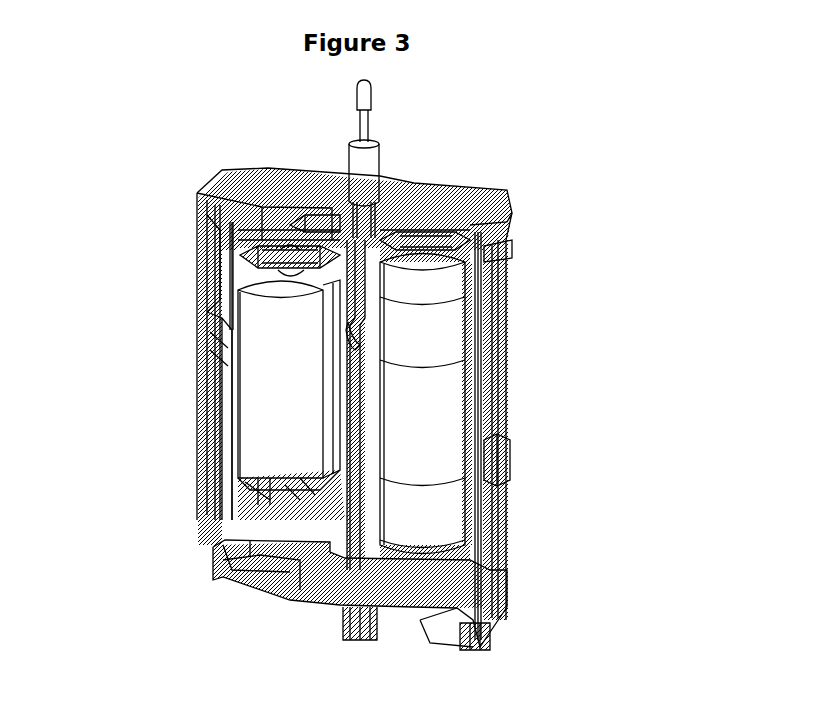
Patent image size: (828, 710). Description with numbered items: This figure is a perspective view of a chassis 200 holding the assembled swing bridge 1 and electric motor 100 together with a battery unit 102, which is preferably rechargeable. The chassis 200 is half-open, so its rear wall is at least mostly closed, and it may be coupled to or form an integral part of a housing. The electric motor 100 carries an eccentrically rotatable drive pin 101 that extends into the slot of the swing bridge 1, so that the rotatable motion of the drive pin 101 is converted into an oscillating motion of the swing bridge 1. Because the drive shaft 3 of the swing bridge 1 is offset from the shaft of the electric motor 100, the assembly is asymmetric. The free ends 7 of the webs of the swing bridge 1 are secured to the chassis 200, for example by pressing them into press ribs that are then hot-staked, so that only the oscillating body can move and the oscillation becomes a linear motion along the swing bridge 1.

The swing bridge 1 is at (250, 235).
The drive shaft 3 is at (372, 111).
The free end 7 is at (205, 318).
The electric motor 100 is at (272, 397).
The drive pin 101 is at (258, 255).
The battery unit 102 is at (427, 372).
The chassis 200 is at (535, 484).